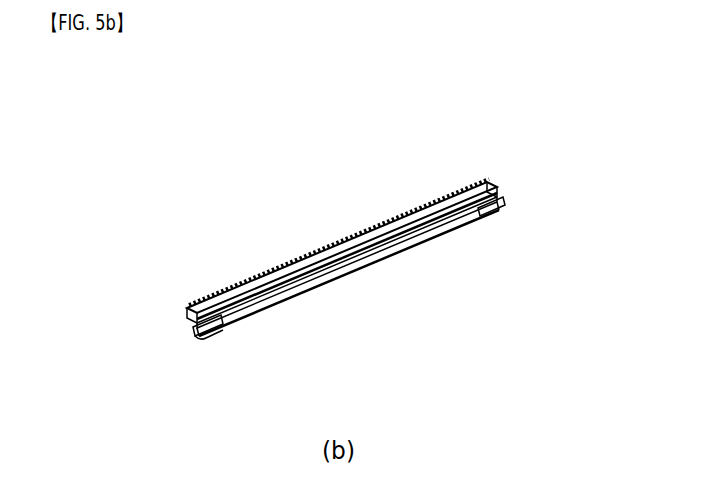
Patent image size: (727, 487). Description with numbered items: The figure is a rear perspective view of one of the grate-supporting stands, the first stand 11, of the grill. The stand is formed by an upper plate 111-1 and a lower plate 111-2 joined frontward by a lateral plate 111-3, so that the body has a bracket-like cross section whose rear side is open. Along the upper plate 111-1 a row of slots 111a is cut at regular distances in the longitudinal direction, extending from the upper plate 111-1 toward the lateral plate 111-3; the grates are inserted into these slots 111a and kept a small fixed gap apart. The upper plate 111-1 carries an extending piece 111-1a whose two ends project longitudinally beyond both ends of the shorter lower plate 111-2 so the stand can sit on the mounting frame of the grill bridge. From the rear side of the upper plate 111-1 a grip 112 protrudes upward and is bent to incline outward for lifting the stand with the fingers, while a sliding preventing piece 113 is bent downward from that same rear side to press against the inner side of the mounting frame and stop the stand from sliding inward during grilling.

The first stand 11 is at (270, 186).
The upper plate 111-1 is at (362, 238).
The slots 111a is at (425, 203).
The extending piece 111-1a is at (500, 174).
The grip 112 is at (388, 251).
The lower plate 111-2 is at (344, 276).
The sliding preventing piece 113 is at (495, 200).
The lateral plate 111-3 is at (214, 338).